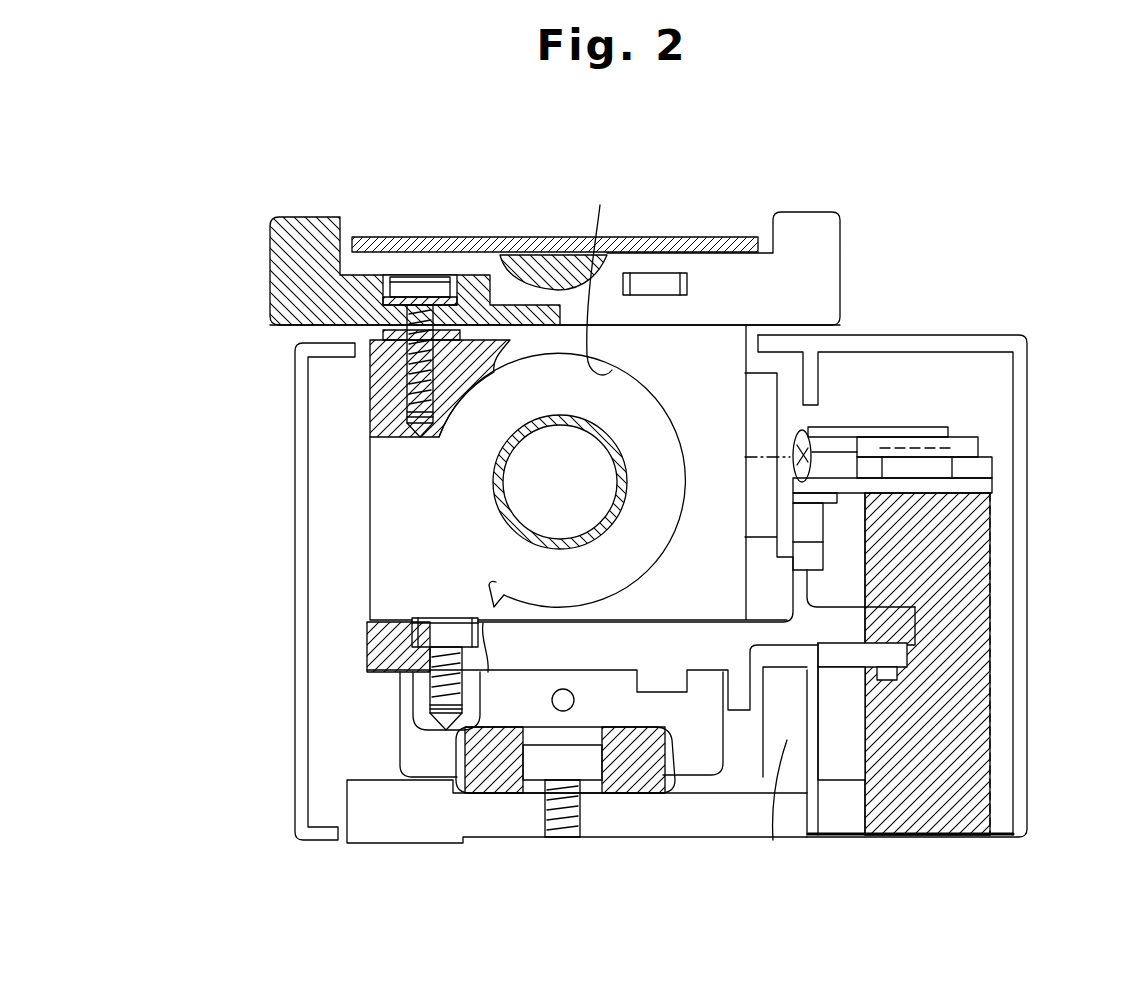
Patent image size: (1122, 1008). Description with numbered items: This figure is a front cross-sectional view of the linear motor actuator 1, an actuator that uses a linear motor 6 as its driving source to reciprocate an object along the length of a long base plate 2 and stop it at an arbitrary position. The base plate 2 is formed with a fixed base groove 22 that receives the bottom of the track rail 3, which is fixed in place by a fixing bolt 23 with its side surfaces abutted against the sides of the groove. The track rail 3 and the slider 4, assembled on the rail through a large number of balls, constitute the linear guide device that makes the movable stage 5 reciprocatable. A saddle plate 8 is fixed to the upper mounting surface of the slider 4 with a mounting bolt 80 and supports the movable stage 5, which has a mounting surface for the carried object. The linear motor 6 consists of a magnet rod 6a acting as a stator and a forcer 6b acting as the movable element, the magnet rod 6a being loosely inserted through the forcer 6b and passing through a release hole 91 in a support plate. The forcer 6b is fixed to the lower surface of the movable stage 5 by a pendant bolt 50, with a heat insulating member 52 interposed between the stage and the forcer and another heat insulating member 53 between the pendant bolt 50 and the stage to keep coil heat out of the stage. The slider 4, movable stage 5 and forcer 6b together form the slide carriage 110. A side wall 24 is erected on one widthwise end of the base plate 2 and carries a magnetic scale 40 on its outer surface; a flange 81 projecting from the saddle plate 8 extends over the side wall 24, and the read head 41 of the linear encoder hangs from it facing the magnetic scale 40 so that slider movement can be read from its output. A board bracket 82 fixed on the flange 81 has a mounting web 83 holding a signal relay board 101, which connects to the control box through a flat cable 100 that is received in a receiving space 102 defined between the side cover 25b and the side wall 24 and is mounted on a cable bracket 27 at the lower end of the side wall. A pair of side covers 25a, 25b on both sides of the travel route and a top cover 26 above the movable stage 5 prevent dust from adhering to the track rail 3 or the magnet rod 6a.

The linear motor actuator 1 is at (838, 190).
The base plate 2 is at (493, 845).
The track rail 3 is at (565, 817).
The slider 4 is at (412, 732).
The movable stage 5 is at (828, 240).
The linear motor 6 is at (493, 472).
The magnet rod 6a is at (522, 469).
The forcer 6b is at (380, 548).
The saddle plate 8 is at (373, 650).
The fixed base groove 22 is at (640, 795).
The fixing bolt 23 is at (568, 838).
The side wall 24 is at (787, 745).
The side cover 25a is at (302, 780).
The side cover 25b is at (1030, 724).
The top cover 26 is at (679, 237).
The cable bracket 27 is at (978, 840).
The magnetic scale 40 is at (818, 707).
The read head 41 is at (840, 765).
The pendant bolt 50 is at (418, 317).
The heat insulating member 52 is at (372, 374).
The heat insulating member 53 is at (401, 278).
The mounting bolt 80 is at (437, 628).
The flange 81 is at (915, 625).
The board bracket 82 is at (790, 584).
The mounting web 83 is at (990, 482).
The release hole 91 is at (602, 274).
The flat cable 100 is at (1000, 781).
The signal relay board 101 is at (967, 435).
The receiving space 102 is at (924, 367).
The slide carriage 110 is at (350, 462).